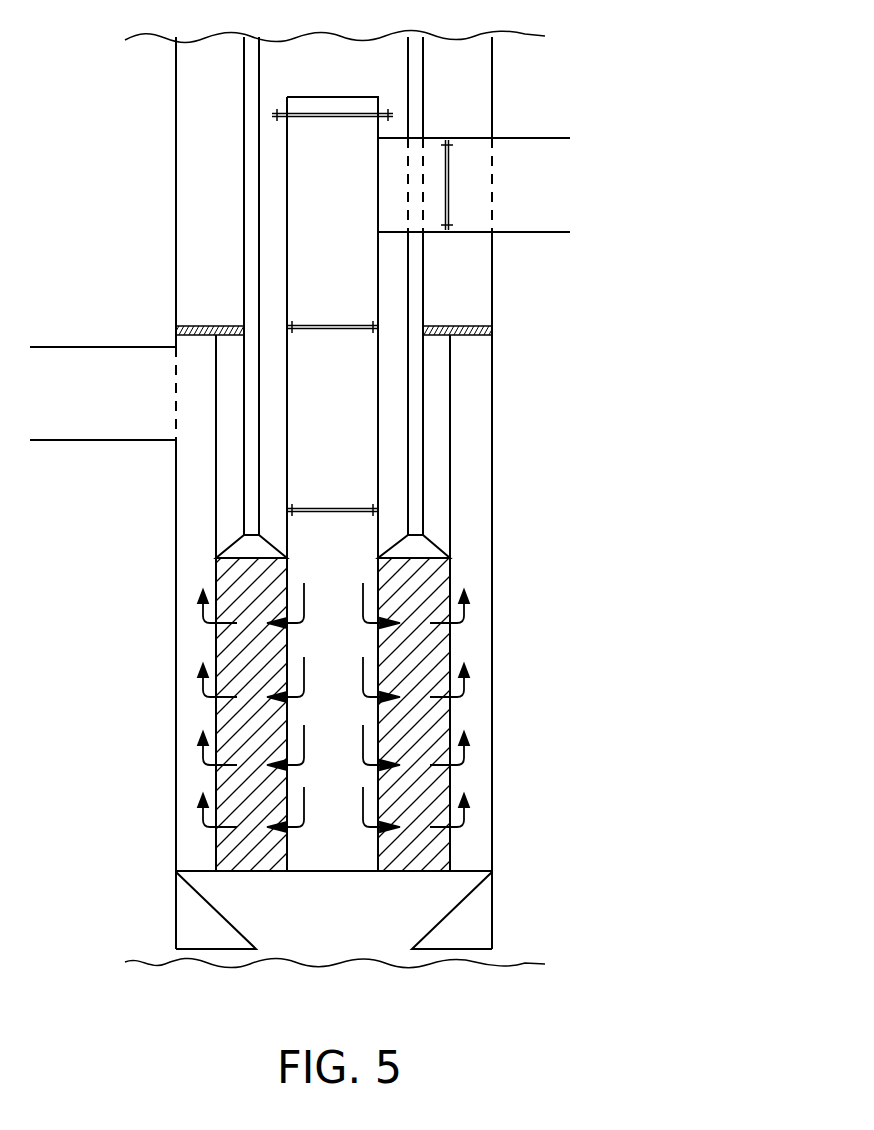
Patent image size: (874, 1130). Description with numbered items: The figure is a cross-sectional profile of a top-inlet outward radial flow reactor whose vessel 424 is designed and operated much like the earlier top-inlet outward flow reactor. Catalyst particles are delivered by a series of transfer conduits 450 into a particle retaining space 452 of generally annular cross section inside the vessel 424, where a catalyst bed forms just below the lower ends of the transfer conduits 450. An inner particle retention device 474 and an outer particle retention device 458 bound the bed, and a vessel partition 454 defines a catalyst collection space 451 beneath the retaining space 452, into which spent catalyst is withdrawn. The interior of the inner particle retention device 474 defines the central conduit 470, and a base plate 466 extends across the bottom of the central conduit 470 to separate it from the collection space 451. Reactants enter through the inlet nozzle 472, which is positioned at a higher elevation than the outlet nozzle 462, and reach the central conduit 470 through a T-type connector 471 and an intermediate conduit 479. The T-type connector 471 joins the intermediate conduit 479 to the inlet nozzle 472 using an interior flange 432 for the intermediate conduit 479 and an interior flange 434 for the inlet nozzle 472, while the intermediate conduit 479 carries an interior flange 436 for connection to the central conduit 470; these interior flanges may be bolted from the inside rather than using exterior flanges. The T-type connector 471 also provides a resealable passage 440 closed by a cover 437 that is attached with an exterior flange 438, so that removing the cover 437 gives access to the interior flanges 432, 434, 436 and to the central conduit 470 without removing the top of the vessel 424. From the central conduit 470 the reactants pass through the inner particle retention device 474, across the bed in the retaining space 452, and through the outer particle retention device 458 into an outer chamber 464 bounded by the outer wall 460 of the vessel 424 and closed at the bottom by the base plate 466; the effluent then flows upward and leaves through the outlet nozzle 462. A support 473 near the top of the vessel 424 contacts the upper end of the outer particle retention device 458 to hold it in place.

The vessel 424 is at (595, 512).
The interior flange 432 is at (333, 322).
The interior flange 434 is at (450, 172).
The interior flange 436 is at (333, 505).
The cover 437 is at (333, 96).
The exterior flange 438 is at (300, 112).
The resealable passage 440 is at (313, 120).
The transfer conduits 450 is at (244, 214).
The catalyst collection space 451 is at (378, 925).
The particle retaining space 452 is at (280, 572).
The vessel partition 454 is at (188, 910).
The outer particle retention device 458 is at (215, 650).
The outer wall 460 is at (493, 676).
The outlet nozzle 462 is at (63, 355).
The outer chamber 464 is at (185, 856).
The base plate 466 is at (333, 873).
The central conduit 470 is at (356, 748).
The T-type connector 471 is at (338, 212).
The inlet nozzle 472 is at (542, 150).
The support 473 is at (190, 325).
The inner particle retention device 474 is at (287, 645).
The intermediate conduit 479 is at (342, 423).